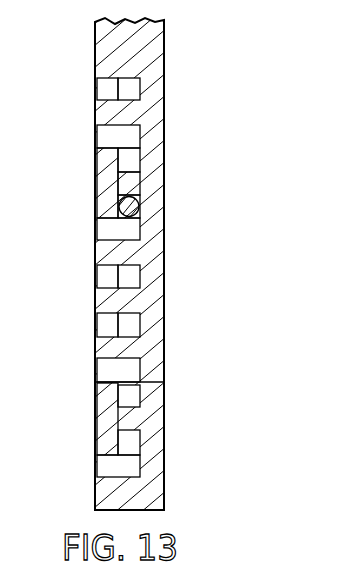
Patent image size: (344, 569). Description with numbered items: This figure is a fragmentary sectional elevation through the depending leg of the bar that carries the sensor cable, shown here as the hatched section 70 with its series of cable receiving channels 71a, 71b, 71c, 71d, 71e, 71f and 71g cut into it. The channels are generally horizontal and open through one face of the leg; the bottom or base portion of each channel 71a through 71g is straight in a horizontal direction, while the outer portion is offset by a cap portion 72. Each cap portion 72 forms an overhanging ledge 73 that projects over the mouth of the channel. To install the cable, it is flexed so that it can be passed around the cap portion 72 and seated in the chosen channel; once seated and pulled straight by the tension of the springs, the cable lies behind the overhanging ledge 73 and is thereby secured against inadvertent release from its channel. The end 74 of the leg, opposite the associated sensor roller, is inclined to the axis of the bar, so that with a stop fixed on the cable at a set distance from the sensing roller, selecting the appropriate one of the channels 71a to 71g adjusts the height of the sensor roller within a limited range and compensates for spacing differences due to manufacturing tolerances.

The retainer plate 70 is at (170, 40).
The cable receiving channel 71a is at (130, 90).
The cable receiving channel 71b is at (133, 158).
The cable receiving channel 71c is at (150, 213).
The cable receiving channel 71d is at (130, 277).
The cable receiving channel 71e is at (130, 330).
The cable receiving channel 71f is at (133, 398).
The cable receiving channel 71g is at (130, 443).
The cap portion 72 is at (95, 178).
The overhanging ledge 73 is at (107, 90).
The end of the leg 74 is at (146, 198).